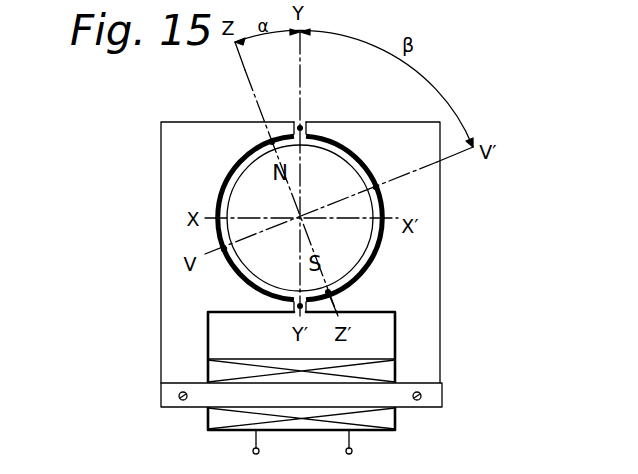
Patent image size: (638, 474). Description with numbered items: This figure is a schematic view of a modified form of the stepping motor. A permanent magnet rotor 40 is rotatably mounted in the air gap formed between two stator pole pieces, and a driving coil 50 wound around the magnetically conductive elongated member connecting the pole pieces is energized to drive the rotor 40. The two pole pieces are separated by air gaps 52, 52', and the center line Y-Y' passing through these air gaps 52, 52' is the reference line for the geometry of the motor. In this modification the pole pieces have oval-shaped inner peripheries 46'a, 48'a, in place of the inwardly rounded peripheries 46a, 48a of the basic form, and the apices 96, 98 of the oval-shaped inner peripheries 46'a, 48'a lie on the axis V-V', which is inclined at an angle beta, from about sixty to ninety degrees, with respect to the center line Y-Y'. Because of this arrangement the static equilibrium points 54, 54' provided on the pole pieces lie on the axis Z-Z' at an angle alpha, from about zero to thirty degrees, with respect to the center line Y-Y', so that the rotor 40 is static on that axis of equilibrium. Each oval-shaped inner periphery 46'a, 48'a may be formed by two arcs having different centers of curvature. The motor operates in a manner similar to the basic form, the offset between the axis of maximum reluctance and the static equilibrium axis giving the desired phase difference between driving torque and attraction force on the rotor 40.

The permanent magnet rotor 40 is at (232, 192).
The inwardly rounded periphery 46a is at (178, 302).
The inwardly rounded periphery 48a is at (417, 287).
The oval-shaped inner periphery 46'a is at (202, 214).
The oval-shaped inner periphery 48'a is at (403, 218).
The driving coil 50 is at (385, 418).
The air gap 52 is at (318, 111).
The static equilibrium point 54 is at (245, 116).
The air gap 52' is at (269, 324).
The static equilibrium point 54' is at (400, 316).
The apex 96 is at (222, 248).
The apex 98 is at (380, 186).